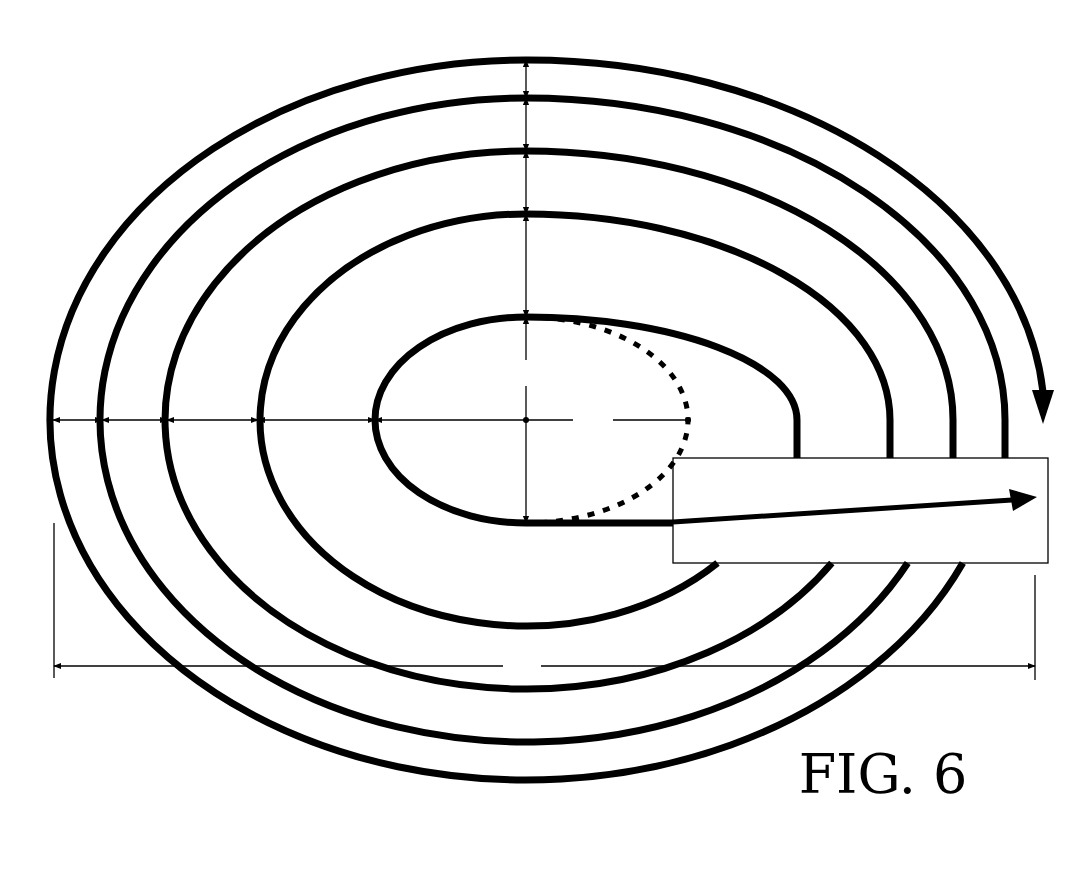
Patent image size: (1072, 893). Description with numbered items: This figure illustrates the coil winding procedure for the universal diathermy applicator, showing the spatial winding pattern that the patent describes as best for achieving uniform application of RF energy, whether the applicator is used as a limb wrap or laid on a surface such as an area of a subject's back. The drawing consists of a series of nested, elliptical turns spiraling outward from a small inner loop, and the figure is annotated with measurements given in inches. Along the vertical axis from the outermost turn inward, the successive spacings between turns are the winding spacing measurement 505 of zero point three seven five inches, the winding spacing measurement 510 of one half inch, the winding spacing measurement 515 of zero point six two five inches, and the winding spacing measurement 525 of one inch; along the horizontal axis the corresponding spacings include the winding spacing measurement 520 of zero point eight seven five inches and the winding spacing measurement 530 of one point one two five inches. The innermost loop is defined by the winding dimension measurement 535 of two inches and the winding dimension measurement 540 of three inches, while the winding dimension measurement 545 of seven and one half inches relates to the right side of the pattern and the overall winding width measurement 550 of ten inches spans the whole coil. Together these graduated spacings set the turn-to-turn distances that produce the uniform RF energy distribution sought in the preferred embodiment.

The winding spacing measurement 505 is at (545, 79).
The winding spacing measurement 510 is at (309, 259).
The winding spacing measurement 515 is at (333, 285).
The winding spacing measurement 520 is at (212, 401).
The winding spacing measurement 525 is at (547, 265).
The winding spacing measurement 530 is at (316, 401).
The winding dimension measurement 535 is at (527, 420).
The winding dimension measurement 540 is at (533, 419).
The winding dimension measurement 545 is at (822, 431).
The overall winding width measurement 550 is at (544, 601).